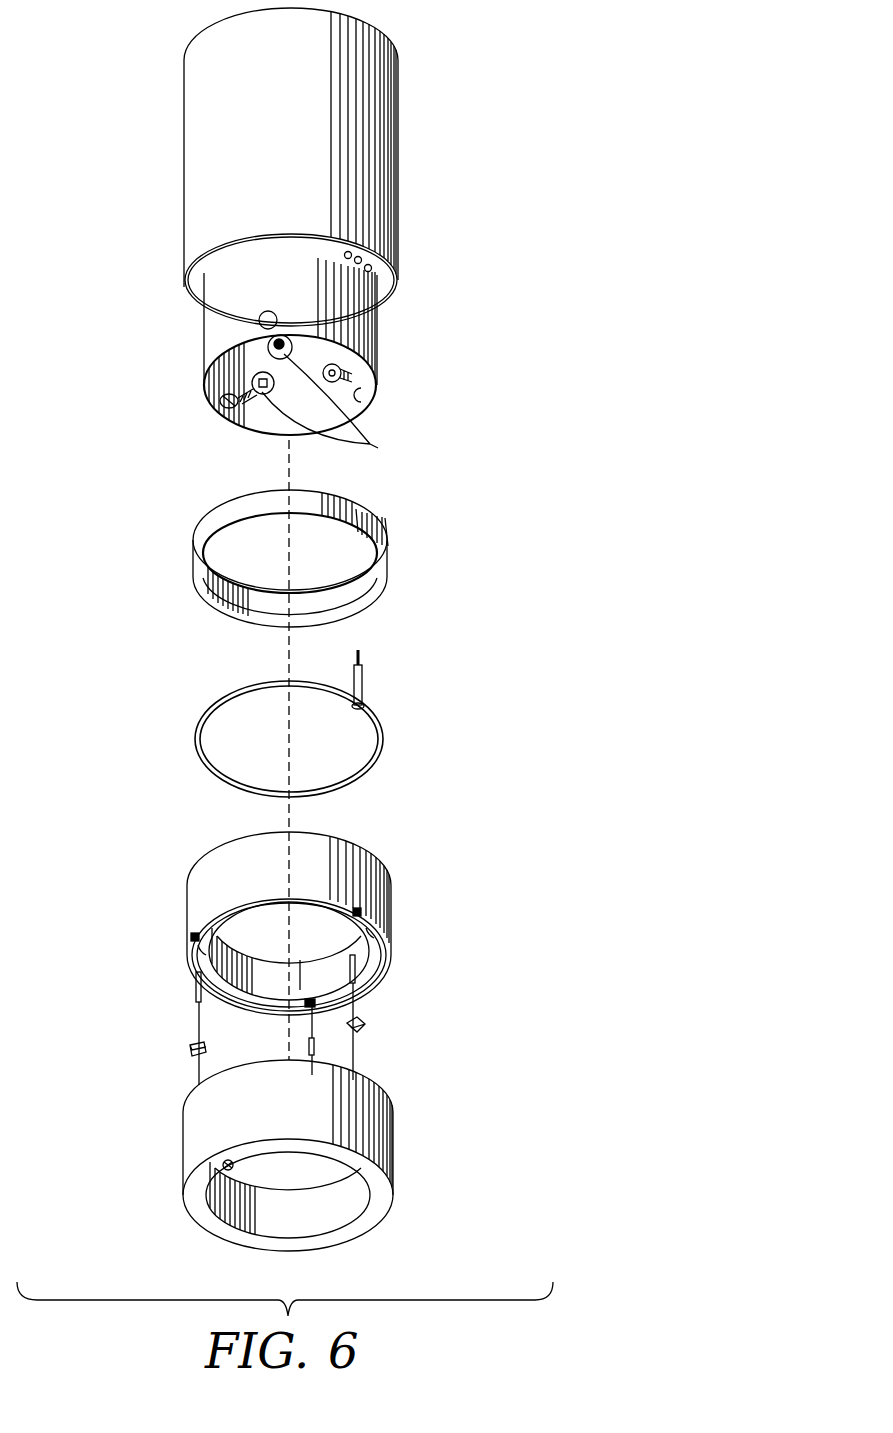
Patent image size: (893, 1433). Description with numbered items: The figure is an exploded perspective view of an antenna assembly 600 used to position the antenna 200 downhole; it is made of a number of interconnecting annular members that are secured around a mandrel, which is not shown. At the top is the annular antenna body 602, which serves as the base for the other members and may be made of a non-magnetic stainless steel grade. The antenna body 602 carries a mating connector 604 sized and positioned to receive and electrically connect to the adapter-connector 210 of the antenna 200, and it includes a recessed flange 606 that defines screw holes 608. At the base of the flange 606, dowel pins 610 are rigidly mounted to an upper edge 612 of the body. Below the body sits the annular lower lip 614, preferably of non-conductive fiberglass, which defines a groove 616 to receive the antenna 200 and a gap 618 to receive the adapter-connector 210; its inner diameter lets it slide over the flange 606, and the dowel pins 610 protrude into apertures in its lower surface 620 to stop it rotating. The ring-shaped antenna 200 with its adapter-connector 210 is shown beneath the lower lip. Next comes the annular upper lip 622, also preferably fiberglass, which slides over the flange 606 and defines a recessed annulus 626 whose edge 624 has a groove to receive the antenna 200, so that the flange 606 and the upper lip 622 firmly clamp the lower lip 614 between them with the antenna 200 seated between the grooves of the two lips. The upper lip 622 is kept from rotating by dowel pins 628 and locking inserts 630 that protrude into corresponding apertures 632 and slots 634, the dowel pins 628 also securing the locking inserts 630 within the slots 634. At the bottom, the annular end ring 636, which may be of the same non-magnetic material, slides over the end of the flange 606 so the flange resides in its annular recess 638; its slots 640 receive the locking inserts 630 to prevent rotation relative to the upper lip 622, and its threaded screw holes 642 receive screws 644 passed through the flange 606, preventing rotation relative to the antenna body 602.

The antenna assembly 600 is at (531, 141).
The annular antenna body 602 is at (408, 118).
The mating connector 604 is at (374, 260).
The recessed flange 606 is at (204, 347).
The screw holes 608 is at (267, 311).
The dowel pins 610 is at (352, 253).
The upper edge 612 is at (386, 300).
The annular lower lip 614 is at (404, 556).
The groove 616 is at (384, 582).
The gap 618 is at (368, 519).
The lower surface 620 is at (222, 505).
The antenna 200 is at (195, 733).
The adapter-connector 210 is at (364, 683).
The annular upper lip 622 is at (405, 886).
The edge 624 is at (271, 953).
The recessed annulus 626 is at (306, 953).
The dowel pins 628 is at (357, 967).
The locking inserts 630 is at (192, 1047).
The apertures 632 is at (359, 913).
The slots 634 is at (368, 934).
The annular end ring 636 is at (407, 1138).
The annular recess 638 is at (373, 1186).
The slots 640 is at (188, 1105).
The threaded screw holes 642 is at (222, 1180).
The screws 644 is at (342, 397).